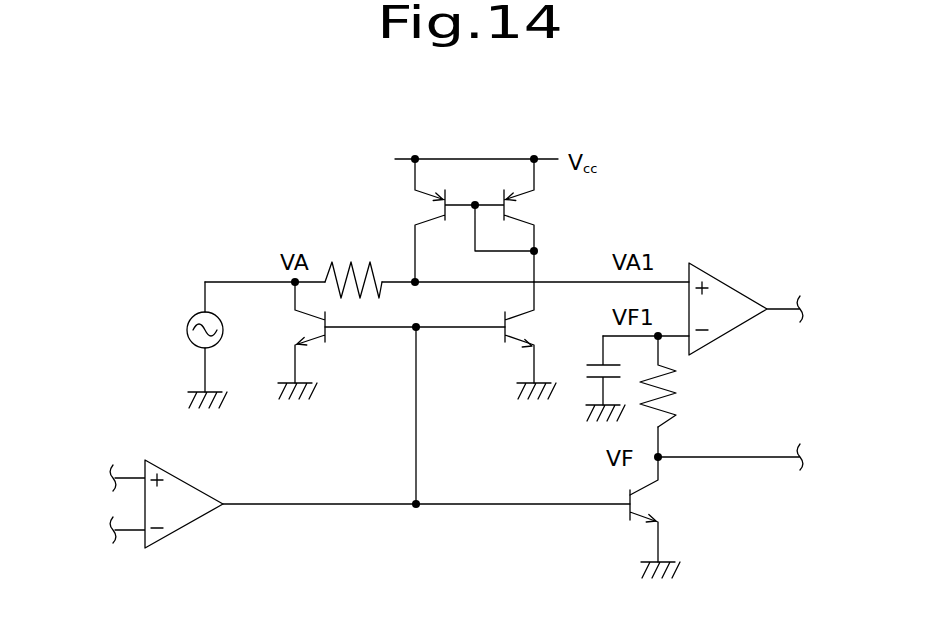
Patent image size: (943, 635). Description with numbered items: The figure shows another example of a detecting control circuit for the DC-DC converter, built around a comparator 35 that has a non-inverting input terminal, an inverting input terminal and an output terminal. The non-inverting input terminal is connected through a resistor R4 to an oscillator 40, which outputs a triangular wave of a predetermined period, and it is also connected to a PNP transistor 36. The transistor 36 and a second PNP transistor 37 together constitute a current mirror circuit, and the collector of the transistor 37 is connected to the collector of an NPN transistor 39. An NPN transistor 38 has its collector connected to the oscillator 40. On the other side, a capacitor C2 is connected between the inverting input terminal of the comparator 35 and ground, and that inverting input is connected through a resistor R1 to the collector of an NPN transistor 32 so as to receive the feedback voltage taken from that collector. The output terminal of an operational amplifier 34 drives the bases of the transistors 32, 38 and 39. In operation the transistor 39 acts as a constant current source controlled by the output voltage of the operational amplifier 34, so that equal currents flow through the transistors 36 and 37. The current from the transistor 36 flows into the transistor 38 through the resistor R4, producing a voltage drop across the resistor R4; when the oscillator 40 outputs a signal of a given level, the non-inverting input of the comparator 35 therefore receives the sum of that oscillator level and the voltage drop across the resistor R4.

The oscillator 40 is at (187, 326).
The NPN transistor 38 is at (326, 341).
The NPN transistor 39 is at (512, 344).
The PNP transistor 36 is at (417, 199).
The PNP transistor 37 is at (523, 211).
The comparator 35 is at (734, 287).
The operational amplifier 34 is at (194, 518).
The NPN transistor 32 is at (641, 520).
The resistor R4 is at (356, 262).
The resistor R1 is at (669, 395).
The capacitor C2 is at (592, 363).